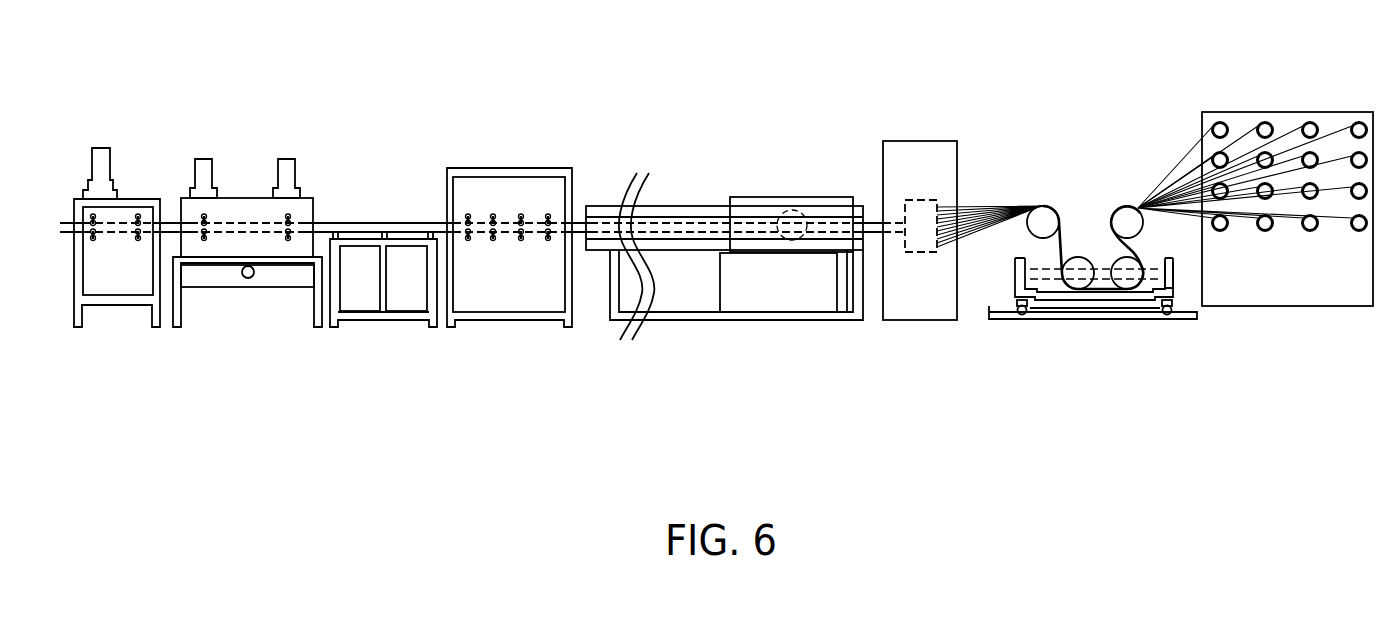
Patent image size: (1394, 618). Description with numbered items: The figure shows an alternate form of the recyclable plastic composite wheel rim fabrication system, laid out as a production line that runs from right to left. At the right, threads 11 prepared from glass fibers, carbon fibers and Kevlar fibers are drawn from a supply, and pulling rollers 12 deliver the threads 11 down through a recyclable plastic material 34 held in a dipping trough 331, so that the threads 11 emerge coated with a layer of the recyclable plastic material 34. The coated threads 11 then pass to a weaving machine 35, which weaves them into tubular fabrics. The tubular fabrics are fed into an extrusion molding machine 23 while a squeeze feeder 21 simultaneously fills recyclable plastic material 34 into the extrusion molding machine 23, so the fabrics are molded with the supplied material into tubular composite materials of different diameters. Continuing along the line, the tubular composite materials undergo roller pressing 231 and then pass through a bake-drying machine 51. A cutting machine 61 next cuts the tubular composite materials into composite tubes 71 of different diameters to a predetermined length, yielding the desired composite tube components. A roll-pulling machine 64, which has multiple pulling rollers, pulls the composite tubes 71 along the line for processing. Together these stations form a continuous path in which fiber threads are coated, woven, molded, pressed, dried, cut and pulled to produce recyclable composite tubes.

The threads 11 is at (1177, 153).
The pulling rollers 12 is at (1120, 215).
The squeeze feeder 21 is at (813, 197).
The extrusion molding machine 23 is at (743, 205).
The roller pressing 231 is at (643, 212).
The recyclable plastic material 34 is at (1108, 282).
The dipping trough 331 is at (1170, 270).
The weaving machine 35 is at (917, 158).
The bake-drying machine 51 is at (507, 187).
The cutting machine 61 is at (125, 199).
The roll-pulling machine 64 is at (238, 198).
The composite tubes 71 is at (370, 222).